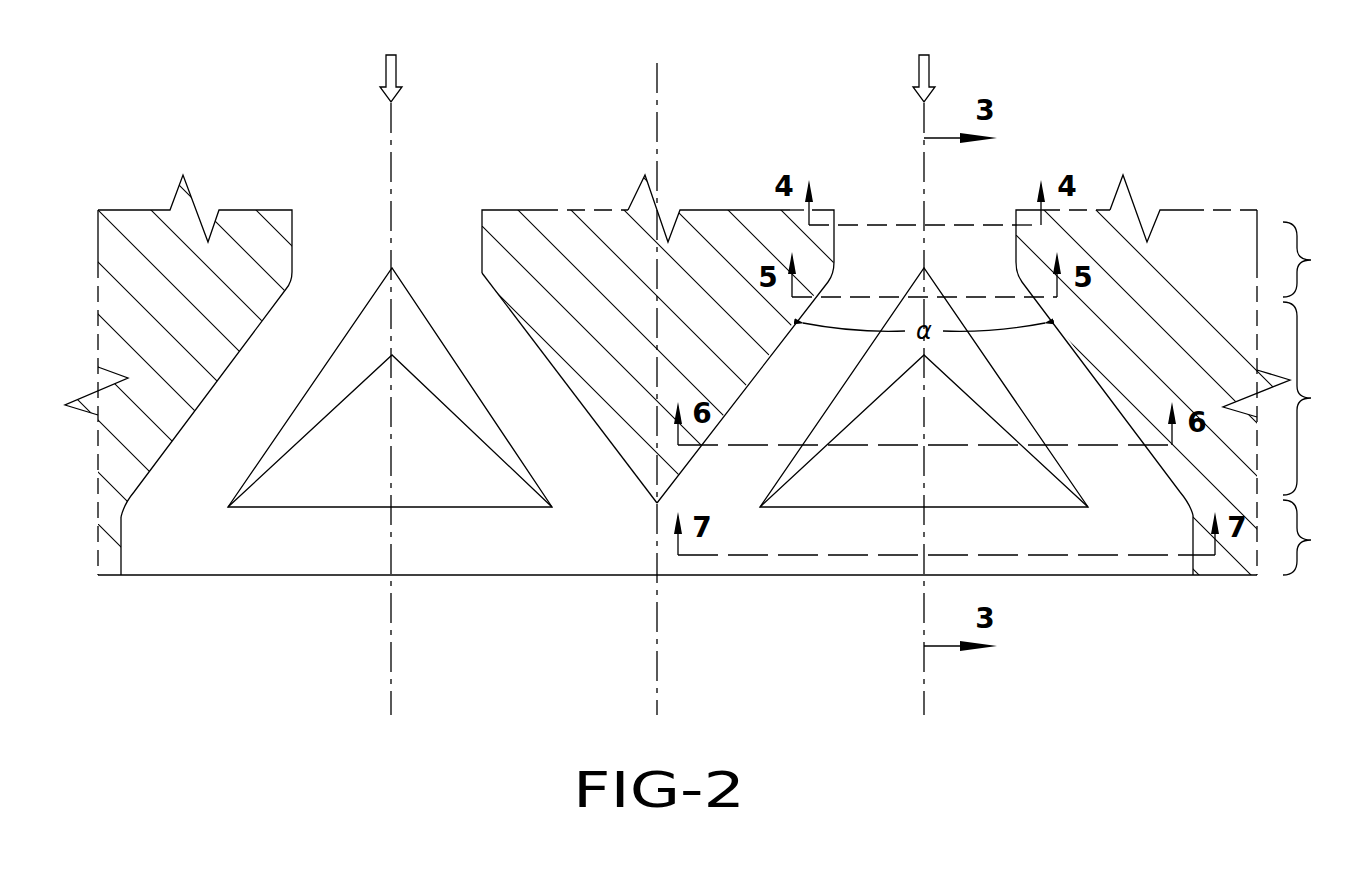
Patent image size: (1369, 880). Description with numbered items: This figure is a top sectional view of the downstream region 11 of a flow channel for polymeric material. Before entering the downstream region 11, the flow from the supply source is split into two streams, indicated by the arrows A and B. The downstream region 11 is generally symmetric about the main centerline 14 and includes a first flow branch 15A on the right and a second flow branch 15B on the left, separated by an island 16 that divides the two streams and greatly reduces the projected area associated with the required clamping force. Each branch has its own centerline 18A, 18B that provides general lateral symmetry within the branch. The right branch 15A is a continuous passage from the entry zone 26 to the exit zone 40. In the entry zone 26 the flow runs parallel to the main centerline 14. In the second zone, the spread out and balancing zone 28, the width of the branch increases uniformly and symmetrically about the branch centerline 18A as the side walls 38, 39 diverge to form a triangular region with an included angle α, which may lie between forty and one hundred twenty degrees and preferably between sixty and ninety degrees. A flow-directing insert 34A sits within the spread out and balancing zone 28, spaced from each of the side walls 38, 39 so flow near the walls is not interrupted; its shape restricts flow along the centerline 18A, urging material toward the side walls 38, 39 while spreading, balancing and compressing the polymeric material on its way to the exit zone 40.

The downstream region 11 is at (1172, 152).
The centerline 14 is at (655, 84).
The first flow branch 15A is at (952, 265).
The second flow branch 15B is at (366, 258).
The island 16 is at (588, 274).
The right branch centerline 18A is at (924, 687).
The left branch centerline 18B is at (391, 686).
The entry zone 26 is at (1319, 259).
The spread out and balancing zone 28 is at (1319, 398).
The flow-directing insert 34A is at (897, 497).
The side wall 38 is at (760, 378).
The side wall 39 is at (1096, 378).
The exit zone 40 is at (1319, 537).